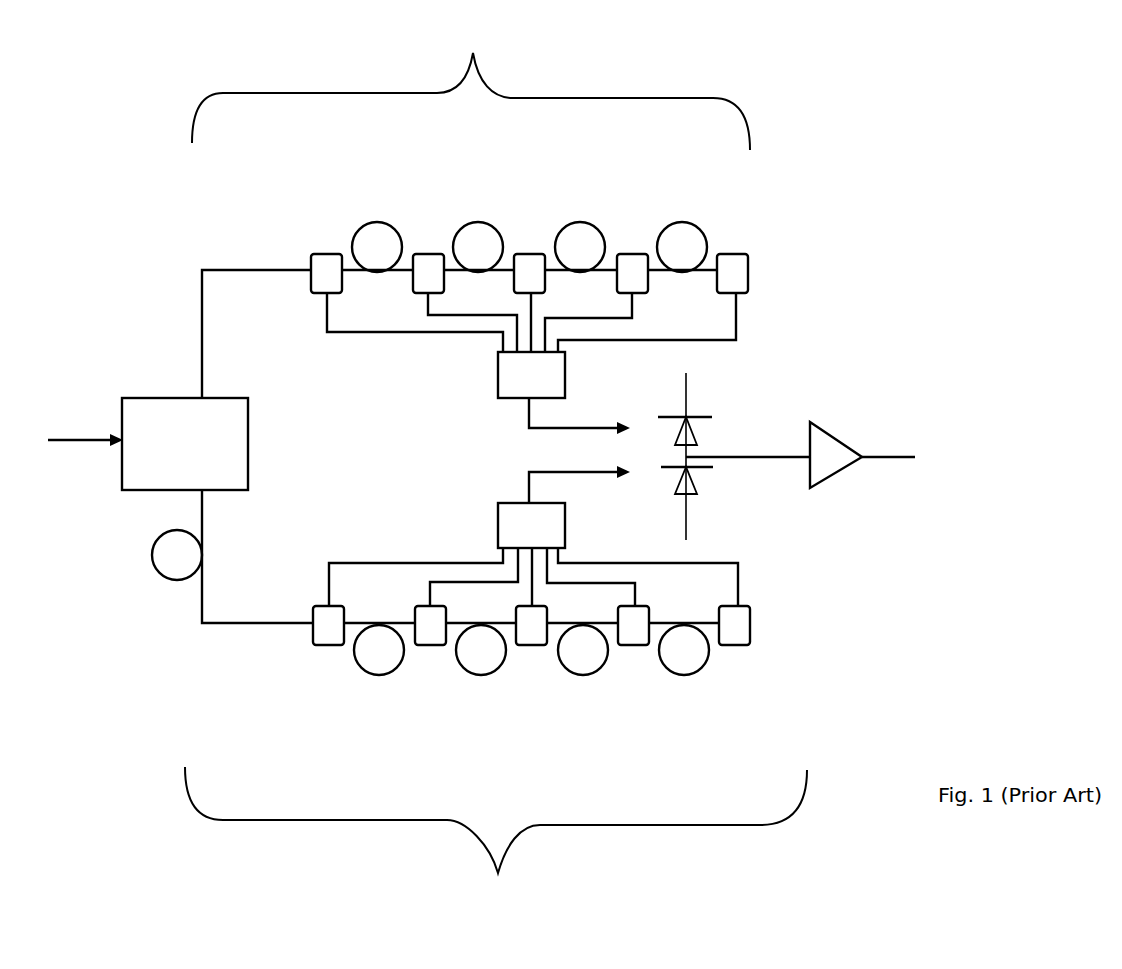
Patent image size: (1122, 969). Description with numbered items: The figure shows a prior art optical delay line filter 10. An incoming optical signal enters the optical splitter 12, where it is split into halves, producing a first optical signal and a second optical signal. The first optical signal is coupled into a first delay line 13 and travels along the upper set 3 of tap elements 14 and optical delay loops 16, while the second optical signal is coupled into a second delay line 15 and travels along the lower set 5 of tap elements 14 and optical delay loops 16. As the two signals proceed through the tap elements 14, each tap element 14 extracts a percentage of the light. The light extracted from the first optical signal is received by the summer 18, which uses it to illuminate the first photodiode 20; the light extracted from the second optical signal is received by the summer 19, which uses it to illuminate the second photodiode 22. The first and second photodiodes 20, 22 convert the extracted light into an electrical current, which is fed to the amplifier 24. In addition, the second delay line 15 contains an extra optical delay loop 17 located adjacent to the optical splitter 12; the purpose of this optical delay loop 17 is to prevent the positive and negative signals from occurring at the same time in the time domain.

The filter 10 is at (839, 101).
The optical splitter 12 is at (165, 397).
The first delay line 13 is at (242, 270).
The second delay line 15 is at (272, 625).
The extra optical delay loop 17 is at (175, 582).
The upper set 3 is at (471, 84).
The lower set 5 is at (496, 838).
The tap element 14 is at (322, 253).
The optical delay loop 16 is at (375, 222).
The summer 18 is at (498, 375).
The summer 19 is at (498, 530).
The first photodiode 20 is at (688, 412).
The second photodiode 22 is at (693, 477).
The amplifier 24 is at (833, 432).